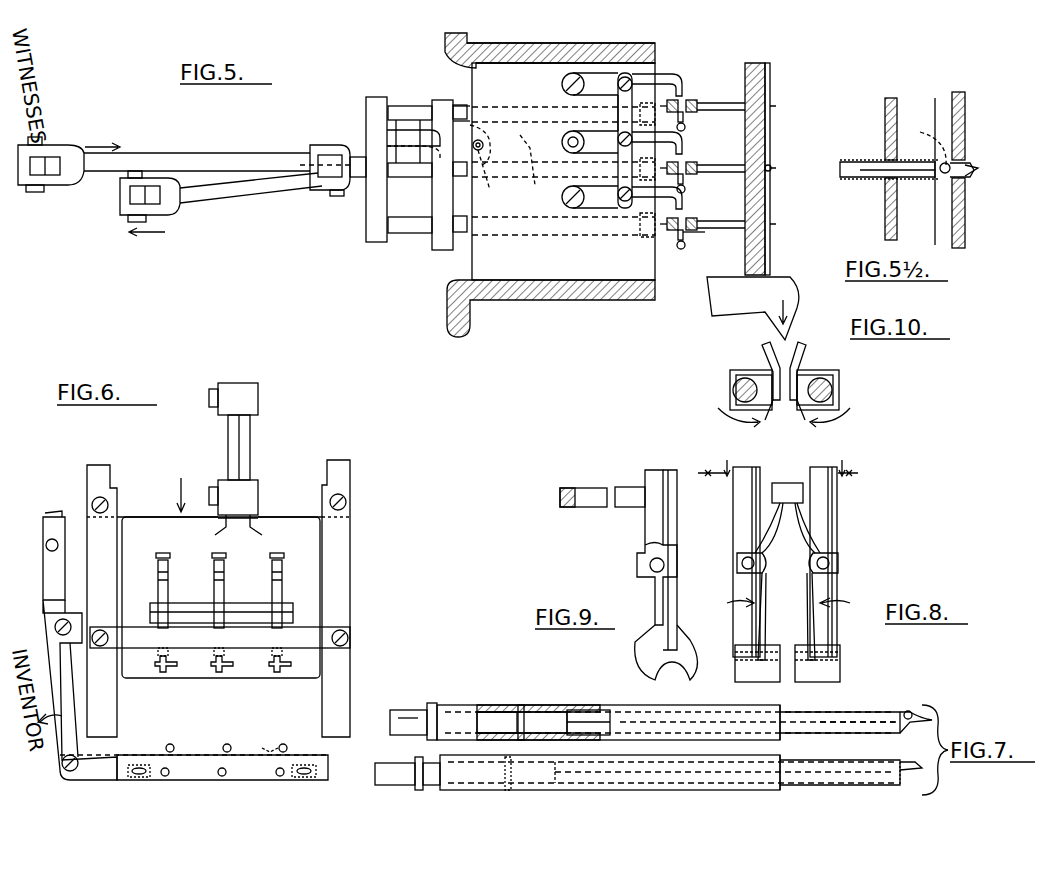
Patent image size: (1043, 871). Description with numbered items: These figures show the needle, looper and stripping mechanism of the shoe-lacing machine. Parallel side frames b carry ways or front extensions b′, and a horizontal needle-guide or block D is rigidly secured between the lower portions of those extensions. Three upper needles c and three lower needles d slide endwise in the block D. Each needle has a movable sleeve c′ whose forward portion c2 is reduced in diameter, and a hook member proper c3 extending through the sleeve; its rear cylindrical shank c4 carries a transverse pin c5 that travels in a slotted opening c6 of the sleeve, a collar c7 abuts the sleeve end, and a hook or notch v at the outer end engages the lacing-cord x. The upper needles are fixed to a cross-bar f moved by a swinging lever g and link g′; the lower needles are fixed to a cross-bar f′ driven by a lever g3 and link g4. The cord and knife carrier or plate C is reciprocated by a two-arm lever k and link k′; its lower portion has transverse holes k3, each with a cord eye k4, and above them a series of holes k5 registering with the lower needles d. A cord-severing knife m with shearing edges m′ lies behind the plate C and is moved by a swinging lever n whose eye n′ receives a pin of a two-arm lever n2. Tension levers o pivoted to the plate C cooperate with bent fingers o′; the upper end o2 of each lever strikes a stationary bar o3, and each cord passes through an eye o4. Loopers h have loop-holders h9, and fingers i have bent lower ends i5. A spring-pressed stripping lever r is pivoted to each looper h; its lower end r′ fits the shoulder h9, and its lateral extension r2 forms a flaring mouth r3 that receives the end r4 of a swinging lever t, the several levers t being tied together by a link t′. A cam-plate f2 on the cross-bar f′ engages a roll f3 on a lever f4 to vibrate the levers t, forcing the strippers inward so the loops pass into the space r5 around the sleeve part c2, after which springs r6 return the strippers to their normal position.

In FIG. 5, the swinging depending lever g is at (120, 194).
In FIG. 5, the link g′ is at (225, 204).
In FIG. 5, the swinging lever g3 is at (48, 160).
In FIG. 5, the link g4 is at (200, 160).
In FIG. 5, the horizontal cross-bar f is at (436, 248).
In FIG. 5, the cross-bar f′ is at (383, 175).
In FIG. 5, the cam-plate f2 is at (404, 130).
In FIG. 5, the pin or roll f3 is at (486, 168).
In FIG. 5, the lever f4 is at (531, 173).
In FIG. 5, the lower needles d is at (420, 104).
In FIG. 5, the upper needles c is at (462, 104).
The upper needles c is at (965, 176).
In FIG. 5, the side frames b is at (447, 320).
In FIG. 5, the front extensions b′ is at (561, 175).
In FIG. 6, the front extensions b′ is at (219, 598).
In FIG. 5, the needle-guide block D is at (563, 171).
In FIG. 5, the swinging horizontal lever t is at (572, 90).
In FIG. 10, the swinging horizontal lever t is at (753, 308).
In FIG. 5, the tie or link t′ is at (605, 113).
In FIG. 5, the loopers h is at (690, 100).
In FIG. 10, the loopers h is at (730, 388).
In FIG. 9, the loopers h is at (658, 628).
In FIG. 8, the loopers h is at (838, 516).
In FIG. 5, the fingers i is at (684, 128).
In FIG. 5, the lower end of finger i5 is at (701, 233).
In FIG. 5, the cord passage eye k4 is at (770, 168).
The cord passage eye k4 is at (930, 143).
In FIG. 6, the cord passage eye k4 is at (268, 748).
In FIG. 5, the cord-severing knife m is at (752, 198).
The cord-severing knife m is at (882, 104).
In FIG. 6, the cord-severing knife m is at (100, 772).
In FIG. 5, the end of lever t r4 is at (690, 200).
In FIG. 10, the end of lever t r4 is at (790, 330).
In FIG. 5, the cord and knife carrier C is at (765, 205).
The cord and knife carrier C is at (912, 228).
In FIG. 6, the cord and knife carrier C is at (219, 597).
The shearing edges m′ is at (893, 171).
In FIG. 6, the shearing edges m′ is at (222, 787).
The transverse needle holes k3 is at (965, 160).
In FIG. 6, the transverse needle holes k3 is at (282, 776).
The needle or hook member c3 is at (845, 170).
In FIG. 7, the needle or hook member c3 is at (818, 722).
The reduced forward portion of sleeve c2 is at (868, 180).
In FIG. 7, the reduced forward portion of sleeve c2 is at (830, 735).
The lacing-cord x is at (945, 178).
In FIG. 7, the lacing-cord x is at (908, 712).
The hook or notch v is at (970, 180).
In FIG. 7, the hook or notch v is at (910, 728).
In FIG. 6, the two-arm lever k is at (260, 396).
In FIG. 6, the link k′ is at (227, 447).
In FIG. 6, the two-arm lever n2 is at (45, 513).
In FIG. 6, the eye or guide n′ is at (34, 558).
In FIG. 6, the tension levers o is at (158, 588).
In FIG. 6, the bent wire finger o′ is at (220, 651).
In FIG. 6, the upper end of tension lever o2 is at (282, 568).
In FIG. 6, the front stationary bar o3 is at (304, 628).
In FIG. 6, the eye or guide o4 is at (280, 560).
In FIG. 6, the swinging lever n is at (50, 667).
In FIG. 6, the holes k5 is at (288, 746).
In FIG. 10, the lateral extension r2 is at (765, 355).
In FIG. 9, the lateral extension r2 is at (622, 486).
In FIG. 8, the lateral extension r2 is at (790, 483).
In FIG. 10, the flaring mouth r3 is at (800, 357).
In FIG. 10, the stripping lever r is at (784, 417).
In FIG. 8, the stripping lever r is at (768, 600).
In FIG. 9, the stripper proper r′ is at (671, 652).
In FIG. 9, the loop-holder shoulder h9 is at (648, 672).
In FIG. 8, the loop-holder shoulder h9 is at (748, 673).
In FIG. 8, the springs r6 is at (820, 520).
In FIG. 8, the open space r5 is at (787, 648).
In FIG. 7, the collar or shoulder c7 is at (432, 710).
In FIG. 7, the needle-shank c4 is at (490, 718).
In FIG. 7, the transverse pin c5 is at (524, 712).
In FIG. 7, the sleeve c′ is at (668, 745).
In FIG. 7, the slotted opening c6 is at (516, 705).